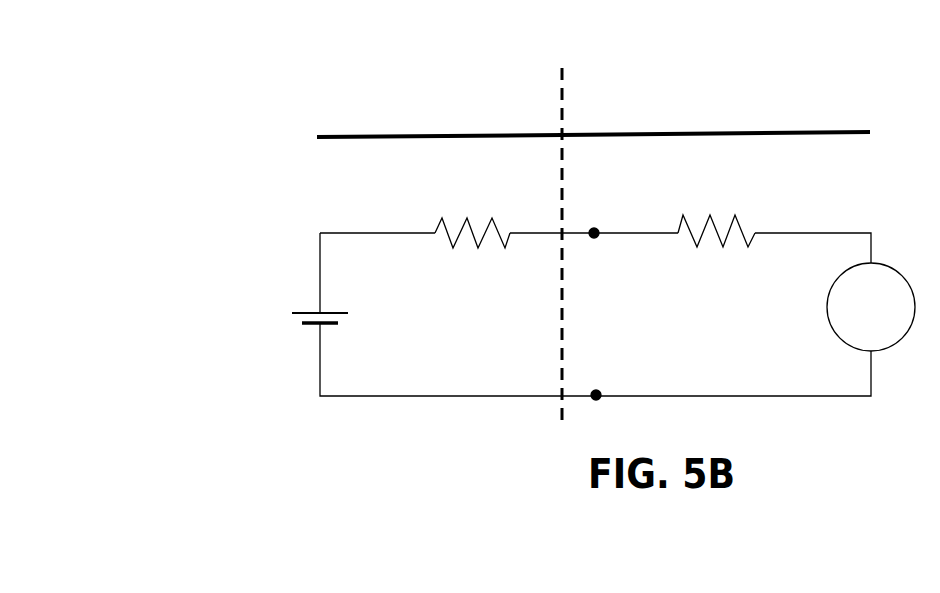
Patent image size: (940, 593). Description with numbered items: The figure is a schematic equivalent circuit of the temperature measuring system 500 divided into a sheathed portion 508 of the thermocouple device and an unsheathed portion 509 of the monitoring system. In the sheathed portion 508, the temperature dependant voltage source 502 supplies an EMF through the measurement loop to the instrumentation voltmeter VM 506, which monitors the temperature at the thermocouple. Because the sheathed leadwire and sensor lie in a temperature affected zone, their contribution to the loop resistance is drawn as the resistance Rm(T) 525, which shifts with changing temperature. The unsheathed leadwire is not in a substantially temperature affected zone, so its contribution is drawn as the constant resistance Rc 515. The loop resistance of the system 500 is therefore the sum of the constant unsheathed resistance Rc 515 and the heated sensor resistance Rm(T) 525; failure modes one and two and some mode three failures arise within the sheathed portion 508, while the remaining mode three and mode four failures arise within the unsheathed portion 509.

The temperature measuring system 500 is at (188, 138).
The temperature dependant voltage source 502 is at (288, 302).
The instrumentation voltmeter 506 is at (838, 337).
The sheathed portion 508 is at (448, 72).
The unsheathed portion 509 is at (790, 63).
The constant resistance Rc 515 is at (762, 213).
The sheathed portion resistance Rm(T) 525 is at (425, 220).